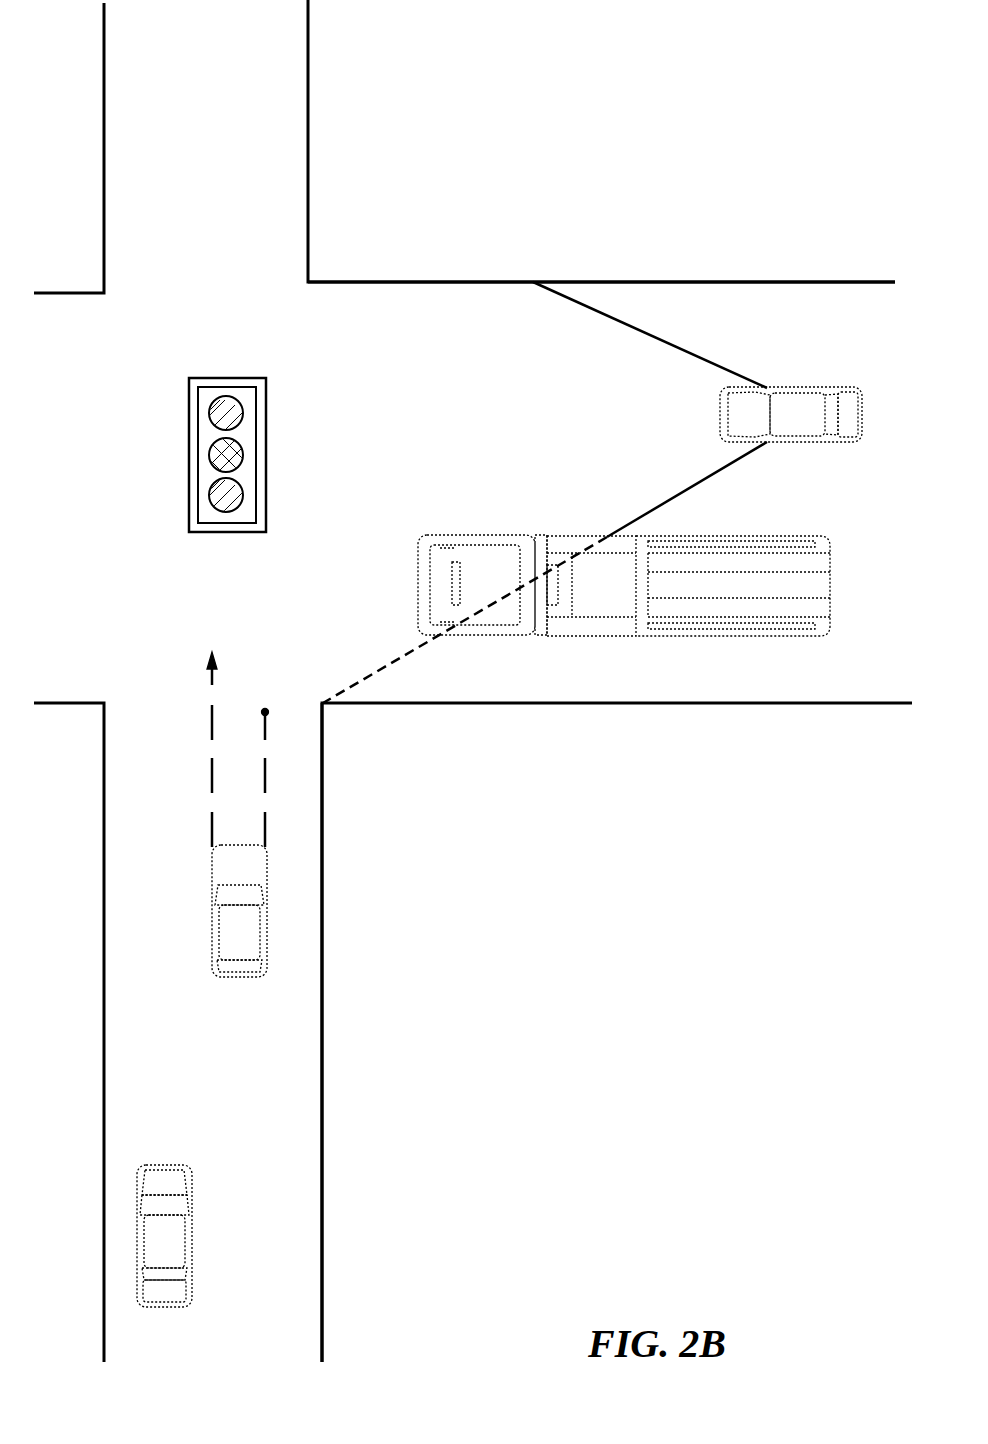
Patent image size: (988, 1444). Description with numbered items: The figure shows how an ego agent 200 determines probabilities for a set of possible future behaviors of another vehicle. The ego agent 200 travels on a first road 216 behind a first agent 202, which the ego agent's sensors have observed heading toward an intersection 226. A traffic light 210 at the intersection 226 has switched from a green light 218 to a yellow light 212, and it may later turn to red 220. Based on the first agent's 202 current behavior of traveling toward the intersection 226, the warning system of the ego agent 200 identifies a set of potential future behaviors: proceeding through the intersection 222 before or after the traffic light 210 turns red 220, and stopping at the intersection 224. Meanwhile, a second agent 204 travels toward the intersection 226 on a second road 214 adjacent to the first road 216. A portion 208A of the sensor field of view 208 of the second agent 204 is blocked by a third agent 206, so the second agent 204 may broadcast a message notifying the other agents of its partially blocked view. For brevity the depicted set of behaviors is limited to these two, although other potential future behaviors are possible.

The ego agent 200 is at (164, 1236).
The first agent 202 is at (239, 911).
The second agent 204 is at (791, 414).
The third agent 206 is at (624, 585).
The sensor field of view 208 is at (680, 348).
The portion of sensor field of view 208A is at (335, 695).
The traffic light 210 is at (240, 378).
The yellow light 212 is at (242, 455).
The second road 214 is at (462, 282).
The first road 216 is at (323, 862).
The green light 218 is at (242, 495).
The red light 220 is at (242, 412).
The proceeding through the intersection 222 is at (212, 718).
The stopping at the intersection 224 is at (265, 820).
The intersection 226 is at (214, 600).